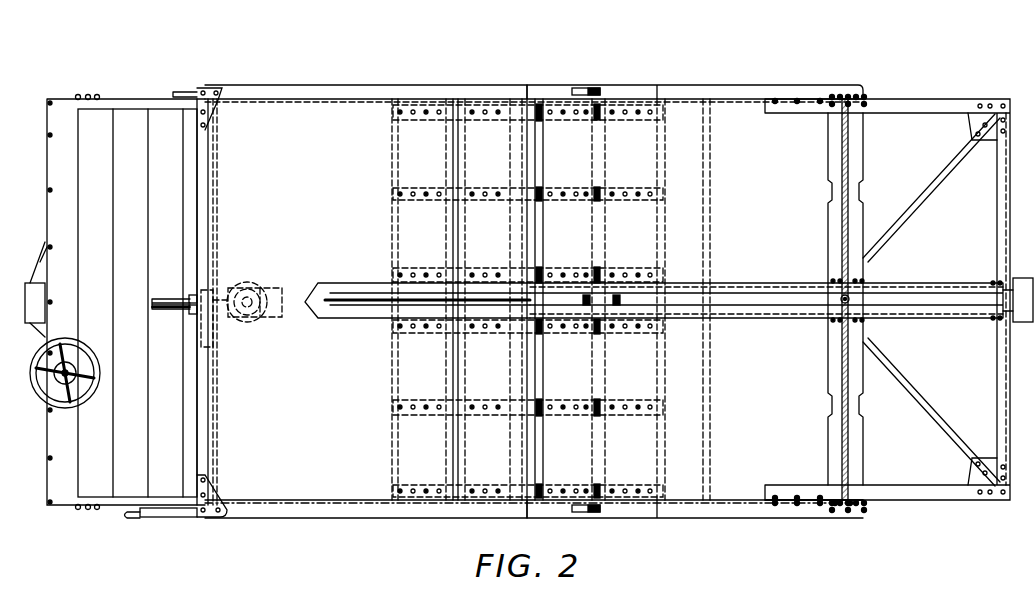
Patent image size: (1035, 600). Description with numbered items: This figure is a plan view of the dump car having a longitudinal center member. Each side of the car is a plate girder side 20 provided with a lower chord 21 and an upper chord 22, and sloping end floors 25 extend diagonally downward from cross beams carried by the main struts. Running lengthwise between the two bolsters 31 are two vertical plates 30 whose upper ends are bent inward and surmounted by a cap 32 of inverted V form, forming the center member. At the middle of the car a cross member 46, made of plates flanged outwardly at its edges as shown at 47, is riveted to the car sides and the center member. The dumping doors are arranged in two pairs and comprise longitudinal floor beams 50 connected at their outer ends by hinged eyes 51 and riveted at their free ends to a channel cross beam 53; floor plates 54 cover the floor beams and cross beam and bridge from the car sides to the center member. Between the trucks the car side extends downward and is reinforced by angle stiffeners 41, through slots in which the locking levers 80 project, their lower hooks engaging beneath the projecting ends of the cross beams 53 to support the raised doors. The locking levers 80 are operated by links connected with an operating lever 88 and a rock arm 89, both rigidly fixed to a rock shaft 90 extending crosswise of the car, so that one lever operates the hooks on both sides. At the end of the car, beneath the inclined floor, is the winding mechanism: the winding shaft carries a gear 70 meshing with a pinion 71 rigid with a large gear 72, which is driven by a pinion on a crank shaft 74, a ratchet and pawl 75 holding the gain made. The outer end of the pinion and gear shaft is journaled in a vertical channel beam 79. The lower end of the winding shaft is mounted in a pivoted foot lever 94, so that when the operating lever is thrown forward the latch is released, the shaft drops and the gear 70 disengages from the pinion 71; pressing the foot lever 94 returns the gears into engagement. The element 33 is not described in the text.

The plate girder side 20 is at (679, 99).
The lower chord 21 is at (793, 508).
The upper chord 22 is at (360, 94).
The sloping end floor 25 is at (713, 170).
The vertical plate 30 is at (783, 274).
The bolster 31 is at (848, 192).
The cap 32 is at (332, 310).
The stop block 33 is at (581, 300).
The angle stiffener 41 is at (624, 513).
The cross member 46 is at (545, 233).
The outward flange 47 is at (545, 283).
The floor beam 50 is at (431, 411).
The hinged eye 51 is at (535, 403).
The cross beam 53 is at (607, 367).
The floor plate 54 is at (448, 299).
The gear 70 is at (258, 284).
The pinion 71 is at (232, 317).
The large gear 72 is at (210, 337).
The crank shaft 74 is at (163, 297).
The ratchet and pawl 75 is at (187, 291).
The vertical channel beam 79 is at (193, 318).
The locking lever 80 is at (593, 94).
The operating lever 88 is at (171, 516).
The rock arm 89 is at (181, 92).
The rock shaft 90 is at (218, 224).
The foot lever 94 is at (160, 312).